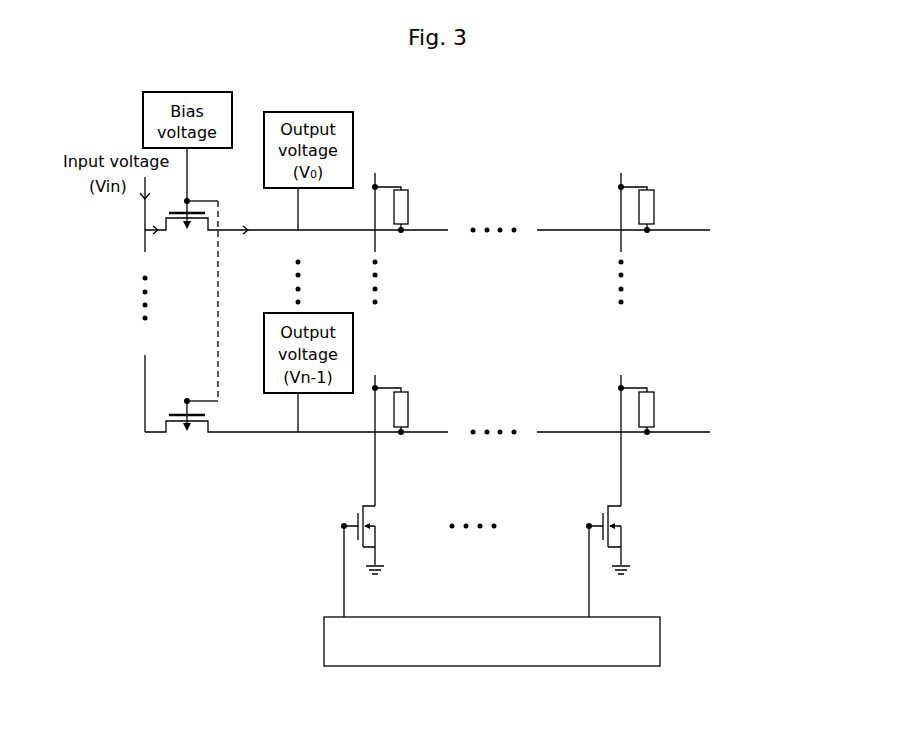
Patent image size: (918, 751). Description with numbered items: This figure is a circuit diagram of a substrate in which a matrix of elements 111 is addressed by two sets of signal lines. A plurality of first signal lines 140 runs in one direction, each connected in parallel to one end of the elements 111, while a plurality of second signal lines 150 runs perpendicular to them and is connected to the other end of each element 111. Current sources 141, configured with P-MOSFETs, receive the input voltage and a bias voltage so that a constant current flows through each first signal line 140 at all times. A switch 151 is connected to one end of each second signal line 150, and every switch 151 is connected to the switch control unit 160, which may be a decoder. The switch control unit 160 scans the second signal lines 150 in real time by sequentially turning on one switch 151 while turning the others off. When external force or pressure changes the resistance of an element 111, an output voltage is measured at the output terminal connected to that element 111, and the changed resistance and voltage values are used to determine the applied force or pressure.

The element 111 is at (408, 202).
The first signal lines 140 is at (638, 142).
The current sources 141 is at (200, 232).
The second signal lines 150 is at (763, 222).
The switch 151 is at (356, 519).
The switch control unit 160 is at (660, 641).